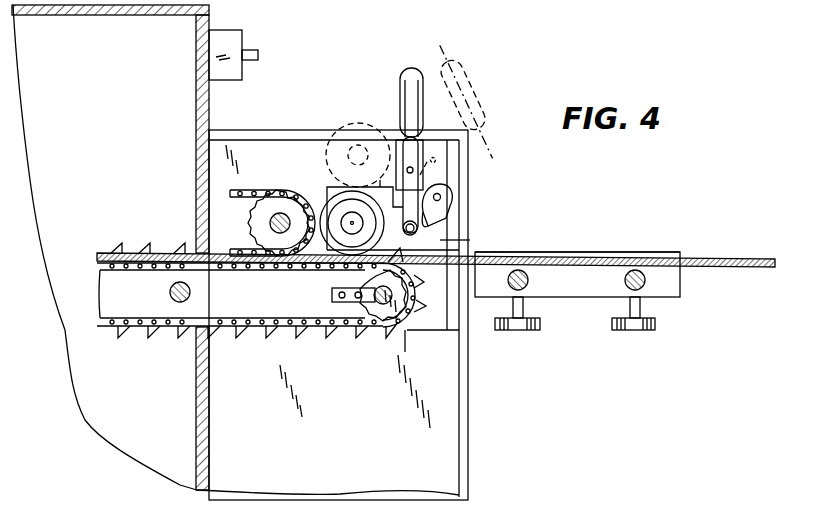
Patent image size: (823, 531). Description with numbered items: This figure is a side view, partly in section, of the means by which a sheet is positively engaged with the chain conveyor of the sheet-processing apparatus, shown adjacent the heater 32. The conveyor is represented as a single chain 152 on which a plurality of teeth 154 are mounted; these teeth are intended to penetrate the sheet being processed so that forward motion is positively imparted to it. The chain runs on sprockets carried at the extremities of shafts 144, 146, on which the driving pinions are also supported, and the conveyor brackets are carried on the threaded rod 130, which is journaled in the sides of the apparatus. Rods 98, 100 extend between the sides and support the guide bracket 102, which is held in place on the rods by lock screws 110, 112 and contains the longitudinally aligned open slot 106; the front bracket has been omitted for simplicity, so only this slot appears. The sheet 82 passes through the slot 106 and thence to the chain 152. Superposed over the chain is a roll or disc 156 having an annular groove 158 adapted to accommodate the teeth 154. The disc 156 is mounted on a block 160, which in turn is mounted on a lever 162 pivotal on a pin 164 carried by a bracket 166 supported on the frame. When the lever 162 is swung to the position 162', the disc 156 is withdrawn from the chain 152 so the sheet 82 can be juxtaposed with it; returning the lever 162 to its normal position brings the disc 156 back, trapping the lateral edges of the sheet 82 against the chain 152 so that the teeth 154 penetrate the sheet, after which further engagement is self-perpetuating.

The heater 32 is at (178, 95).
The sheet 82 is at (590, 258).
The rod 98 is at (513, 290).
The rod 100 is at (645, 288).
The guide bracket 102 is at (588, 300).
The open slot 106 is at (628, 258).
The lock screw 110 is at (510, 330).
The lock screw 112 is at (650, 330).
The threaded rod 130 is at (168, 292).
The shaft 144 is at (284, 268).
The shaft 146 is at (402, 322).
The chain 152 is at (224, 335).
The teeth 154 is at (148, 250).
The disc 156 is at (282, 195).
The annular groove 158 is at (316, 194).
The block 160 is at (366, 187).
The lever 162 is at (400, 140).
The lever position 162' is at (466, 97).
The pin 164 is at (423, 228).
The bracket 166 is at (443, 241).